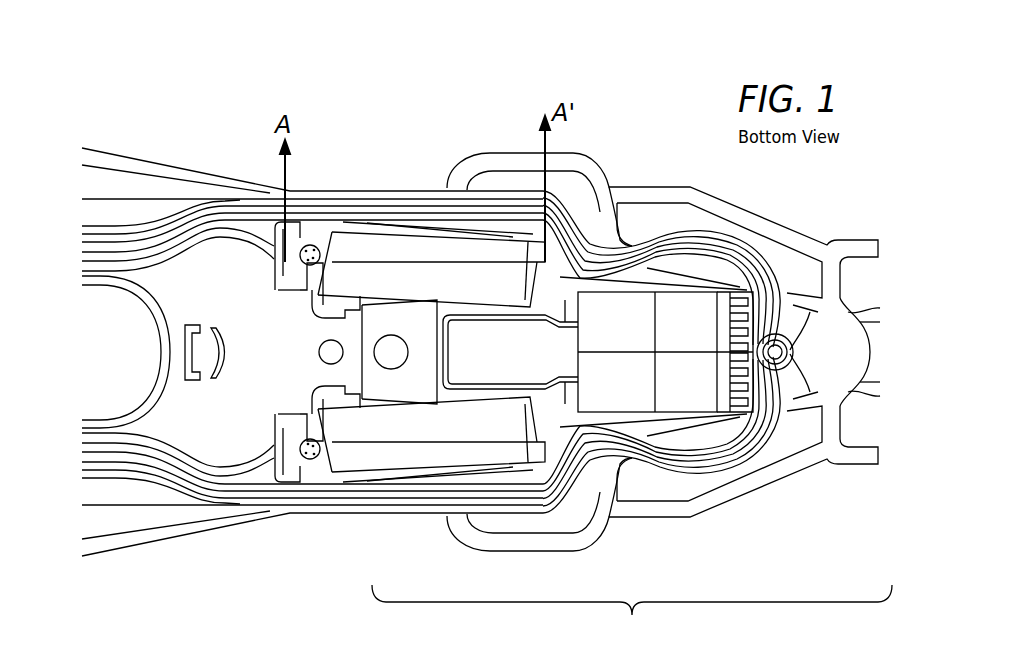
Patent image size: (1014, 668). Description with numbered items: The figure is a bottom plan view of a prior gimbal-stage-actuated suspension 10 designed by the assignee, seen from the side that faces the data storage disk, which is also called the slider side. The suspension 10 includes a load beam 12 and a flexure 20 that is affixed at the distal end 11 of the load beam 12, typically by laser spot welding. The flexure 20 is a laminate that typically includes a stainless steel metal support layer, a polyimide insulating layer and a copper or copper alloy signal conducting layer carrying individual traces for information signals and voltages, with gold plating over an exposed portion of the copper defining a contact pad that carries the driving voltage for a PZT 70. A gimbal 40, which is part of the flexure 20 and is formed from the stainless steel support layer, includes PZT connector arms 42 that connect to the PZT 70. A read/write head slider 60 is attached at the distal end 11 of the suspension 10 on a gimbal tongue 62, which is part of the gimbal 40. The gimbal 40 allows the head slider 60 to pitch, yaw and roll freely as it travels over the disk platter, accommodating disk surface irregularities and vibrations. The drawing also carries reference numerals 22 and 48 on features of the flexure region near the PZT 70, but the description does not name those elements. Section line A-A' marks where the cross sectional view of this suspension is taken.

The suspension 10 is at (218, 105).
The distal end 11 is at (632, 612).
The load beam 12 is at (157, 150).
The flexure 20 is at (482, 128).
The clip 22 is at (360, 182).
The gimbal 40 is at (635, 128).
The PZT connector arms 42 is at (550, 280).
The pivot ball 48 is at (311, 245).
The read/write head slider 60 is at (685, 388).
The gimbal tongue 62 is at (568, 370).
The PZT 70 is at (397, 240).